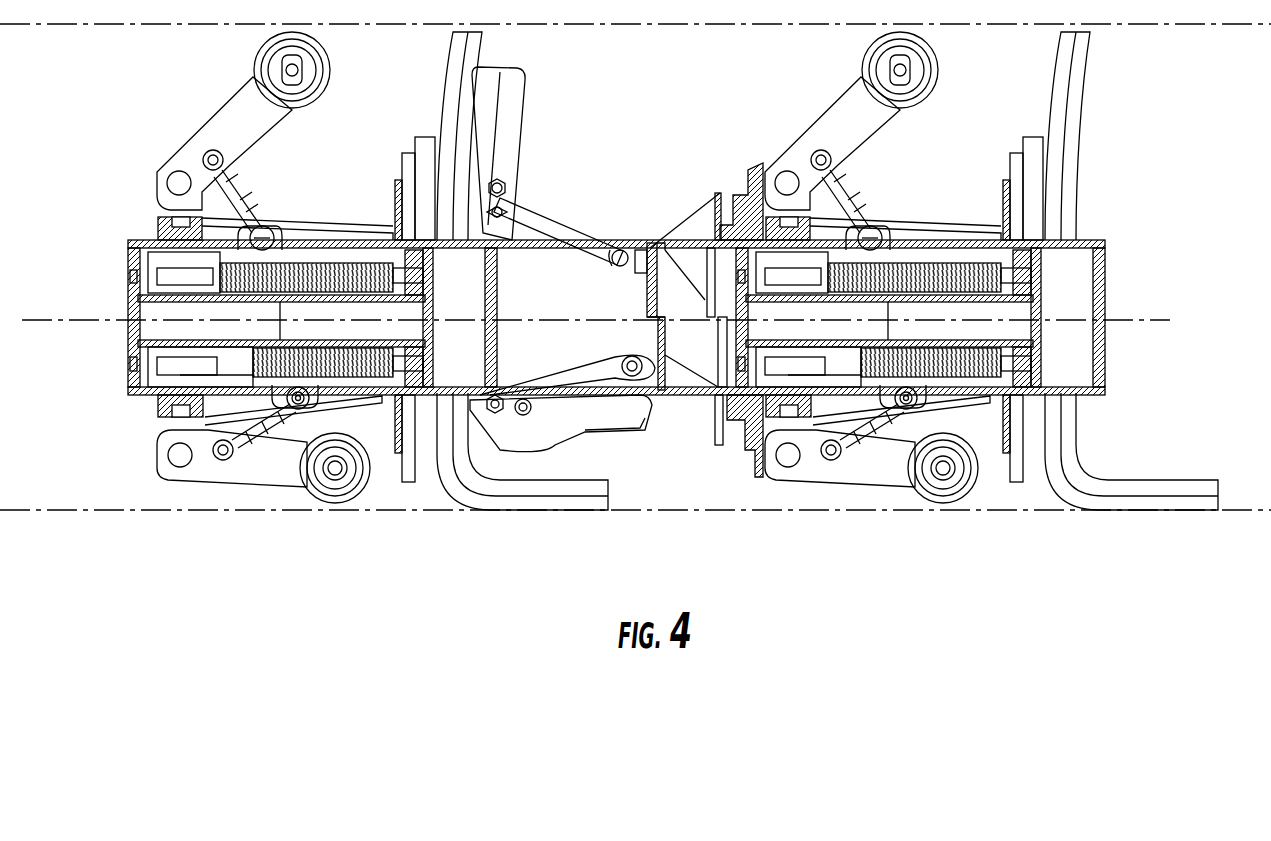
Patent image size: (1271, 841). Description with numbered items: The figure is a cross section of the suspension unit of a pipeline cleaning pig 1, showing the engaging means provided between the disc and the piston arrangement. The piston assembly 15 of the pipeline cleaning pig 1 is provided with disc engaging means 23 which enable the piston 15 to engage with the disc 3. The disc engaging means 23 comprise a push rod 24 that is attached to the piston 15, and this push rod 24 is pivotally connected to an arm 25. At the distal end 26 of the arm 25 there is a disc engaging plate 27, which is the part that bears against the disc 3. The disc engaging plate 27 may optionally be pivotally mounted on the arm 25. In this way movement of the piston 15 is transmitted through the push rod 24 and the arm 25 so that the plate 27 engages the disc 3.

The pipeline cleaning pig 1 is at (815, 503).
The disc 3 is at (462, 505).
The piston assembly 15 is at (384, 397).
The disc engaging means 23 is at (643, 393).
The push rod 24 is at (640, 262).
The arm 25 is at (563, 205).
The distal end 26 is at (518, 185).
The disc engaging plate 27 is at (513, 98).